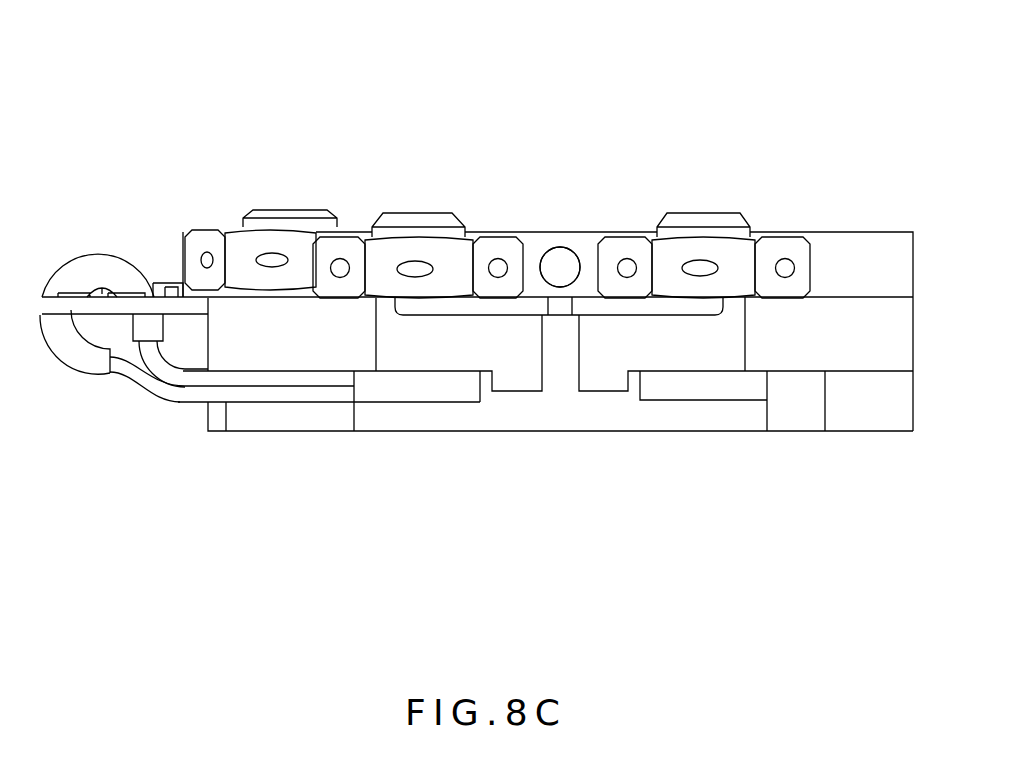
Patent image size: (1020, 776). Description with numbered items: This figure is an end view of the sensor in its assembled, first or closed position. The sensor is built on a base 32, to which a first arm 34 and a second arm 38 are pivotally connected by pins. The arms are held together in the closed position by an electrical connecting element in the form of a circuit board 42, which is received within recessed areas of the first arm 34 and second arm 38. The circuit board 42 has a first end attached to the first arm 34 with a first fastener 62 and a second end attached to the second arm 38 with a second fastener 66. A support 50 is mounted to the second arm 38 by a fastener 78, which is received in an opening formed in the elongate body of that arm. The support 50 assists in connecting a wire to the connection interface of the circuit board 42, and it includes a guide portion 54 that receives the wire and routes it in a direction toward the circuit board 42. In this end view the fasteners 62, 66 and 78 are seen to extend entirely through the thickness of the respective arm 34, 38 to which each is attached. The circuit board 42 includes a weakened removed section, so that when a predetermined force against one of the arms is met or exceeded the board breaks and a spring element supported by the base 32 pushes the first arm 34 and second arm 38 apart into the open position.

The base 32 is at (717, 413).
The first arm 34 is at (872, 328).
The second arm 38 is at (273, 343).
The circuit board 42 is at (103, 311).
The support 50 is at (173, 393).
The guide portion 54 is at (102, 266).
The first fastener 62 is at (700, 222).
The second fastener 66 is at (417, 217).
The fastener 78 is at (294, 212).